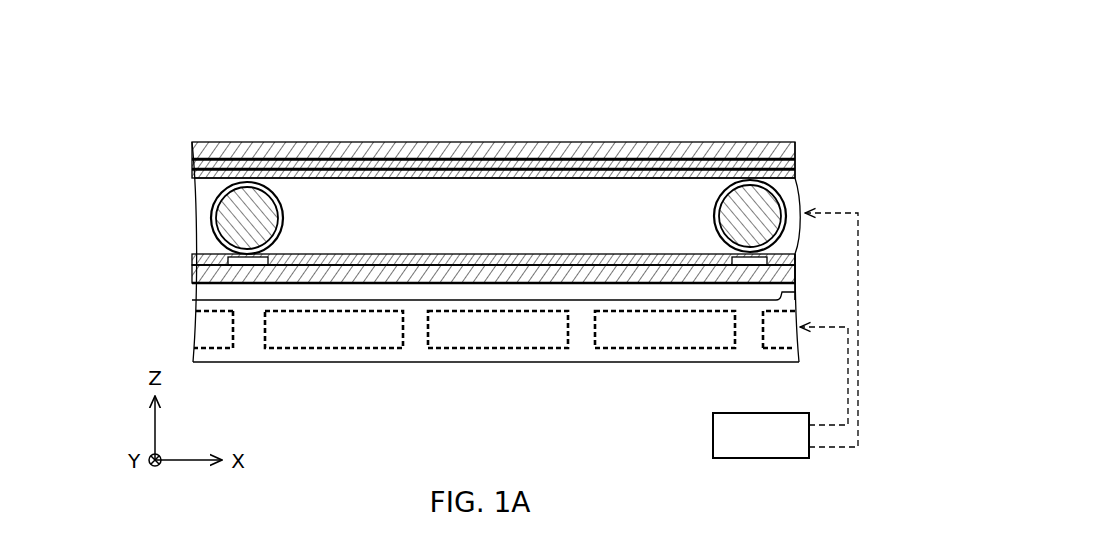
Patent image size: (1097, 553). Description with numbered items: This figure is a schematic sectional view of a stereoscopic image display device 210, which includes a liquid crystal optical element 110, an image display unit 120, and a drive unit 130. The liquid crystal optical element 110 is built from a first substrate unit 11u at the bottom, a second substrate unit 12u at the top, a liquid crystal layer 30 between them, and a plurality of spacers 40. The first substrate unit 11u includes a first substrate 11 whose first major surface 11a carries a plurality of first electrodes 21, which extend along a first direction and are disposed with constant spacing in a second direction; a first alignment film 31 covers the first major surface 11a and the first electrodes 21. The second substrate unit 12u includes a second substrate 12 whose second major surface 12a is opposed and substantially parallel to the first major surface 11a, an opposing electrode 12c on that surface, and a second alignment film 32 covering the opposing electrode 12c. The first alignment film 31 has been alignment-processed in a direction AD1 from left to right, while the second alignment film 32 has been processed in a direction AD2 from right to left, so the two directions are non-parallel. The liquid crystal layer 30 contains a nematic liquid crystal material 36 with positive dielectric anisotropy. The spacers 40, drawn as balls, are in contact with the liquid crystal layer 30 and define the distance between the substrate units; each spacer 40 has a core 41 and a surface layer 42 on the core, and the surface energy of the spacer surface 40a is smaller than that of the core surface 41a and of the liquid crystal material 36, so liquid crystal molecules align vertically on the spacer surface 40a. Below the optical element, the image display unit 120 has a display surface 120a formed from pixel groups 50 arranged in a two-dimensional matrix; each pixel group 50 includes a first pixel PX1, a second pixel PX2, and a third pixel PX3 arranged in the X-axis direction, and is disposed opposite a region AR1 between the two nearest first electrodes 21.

The second substrate unit 12u is at (142, 107).
The second substrate 12 is at (192, 142).
The opposing electrode 12c is at (194, 164).
The second alignment film 32 is at (200, 175).
The liquid crystal layer 30 is at (195, 213).
The liquid crystal material 36 is at (206, 192).
The spacer 40 is at (504, 207).
The core 41 is at (760, 200).
The surface layer 42 is at (788, 200).
The surface of the core 41a is at (717, 202).
The surface of the spacer 40a is at (719, 190).
The second major surface 12a is at (787, 163).
The first substrate unit 11u is at (142, 260).
The first electrode 21 is at (213, 261).
The first alignment film 31 is at (218, 272).
The first substrate 11 is at (208, 300).
The first major surface 11a is at (793, 257).
The display surface 120a is at (781, 294).
The image display unit 120 is at (494, 394).
The pixel group 50 is at (500, 394).
The first pixel PX1 is at (373, 349).
The second pixel PX2 is at (493, 349).
The third pixel PX3 is at (664, 372).
The drive unit 130 is at (778, 432).
The stereoscopic image display device 210 is at (628, 88).
The liquid crystal optical element 110 is at (732, 139).
The direction of alignment processing of the first alignment film AD1 is at (255, 385).
The direction of alignment processing of the second alignment film AD2 is at (705, 102).
The region between the two nearest first electrodes AR1 is at (444, 253).